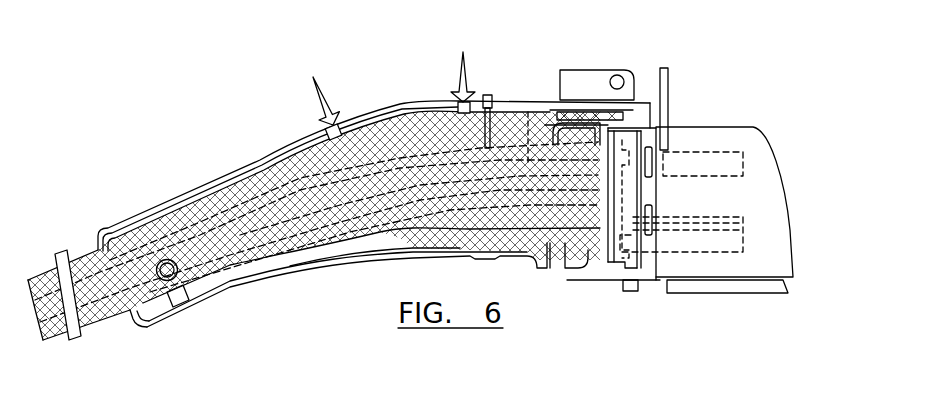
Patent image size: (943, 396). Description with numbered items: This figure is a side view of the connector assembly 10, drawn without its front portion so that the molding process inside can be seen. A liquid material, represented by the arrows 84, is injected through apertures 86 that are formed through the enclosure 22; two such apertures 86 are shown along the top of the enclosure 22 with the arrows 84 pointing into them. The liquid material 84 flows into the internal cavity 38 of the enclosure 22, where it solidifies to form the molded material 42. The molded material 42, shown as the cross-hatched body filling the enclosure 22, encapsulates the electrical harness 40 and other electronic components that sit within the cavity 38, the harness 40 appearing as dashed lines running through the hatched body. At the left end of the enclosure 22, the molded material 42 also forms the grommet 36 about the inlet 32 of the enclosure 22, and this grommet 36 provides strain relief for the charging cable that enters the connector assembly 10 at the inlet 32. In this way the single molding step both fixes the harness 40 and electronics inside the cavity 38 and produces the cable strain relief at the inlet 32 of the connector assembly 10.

The connector assembly 10 is at (694, 62).
The enclosure 22 is at (189, 184).
The inlet 32 is at (137, 322).
The grommet 36 is at (88, 262).
The internal cavity 38 is at (228, 291).
The electrical harness 40 is at (286, 176).
The molded material 42 is at (283, 254).
The liquid material 84 is at (318, 92).
The apertures 86 is at (327, 133).